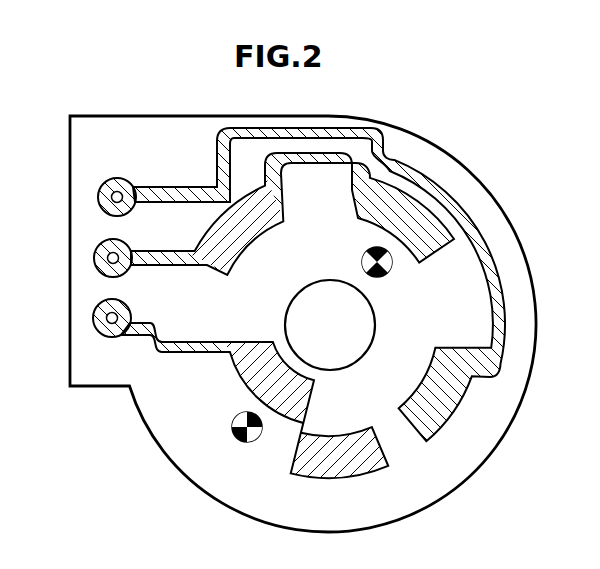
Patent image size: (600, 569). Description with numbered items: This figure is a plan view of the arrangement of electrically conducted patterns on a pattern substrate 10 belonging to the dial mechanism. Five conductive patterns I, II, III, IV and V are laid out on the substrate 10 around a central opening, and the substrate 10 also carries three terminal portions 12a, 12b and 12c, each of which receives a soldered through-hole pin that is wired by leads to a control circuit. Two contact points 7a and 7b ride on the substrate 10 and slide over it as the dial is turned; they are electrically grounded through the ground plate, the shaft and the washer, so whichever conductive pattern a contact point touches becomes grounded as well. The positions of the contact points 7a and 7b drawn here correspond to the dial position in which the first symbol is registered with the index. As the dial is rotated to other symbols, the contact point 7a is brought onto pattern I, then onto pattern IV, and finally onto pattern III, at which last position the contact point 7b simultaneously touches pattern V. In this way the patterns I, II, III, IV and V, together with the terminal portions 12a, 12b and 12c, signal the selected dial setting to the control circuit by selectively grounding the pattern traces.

The substrate 10 is at (490, 226).
The terminal portion 12a is at (110, 197).
The terminal portion 12b is at (108, 258).
The terminal portion 12c is at (108, 320).
The conductive pattern I is at (439, 416).
The conductive pattern II is at (338, 464).
The conductive pattern III is at (413, 203).
The conductive pattern IV is at (221, 267).
The conductive pattern V is at (303, 401).
The contact point 7a is at (238, 441).
The contact point 7b is at (378, 277).